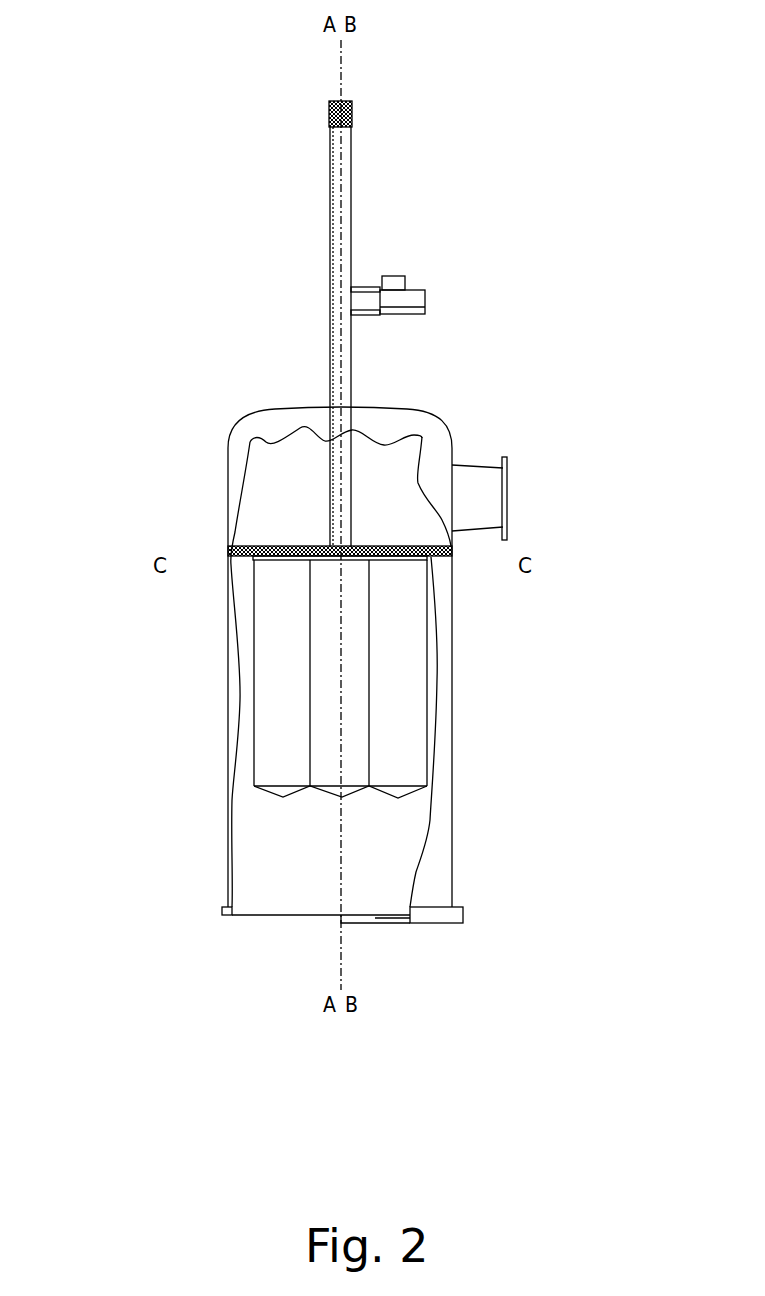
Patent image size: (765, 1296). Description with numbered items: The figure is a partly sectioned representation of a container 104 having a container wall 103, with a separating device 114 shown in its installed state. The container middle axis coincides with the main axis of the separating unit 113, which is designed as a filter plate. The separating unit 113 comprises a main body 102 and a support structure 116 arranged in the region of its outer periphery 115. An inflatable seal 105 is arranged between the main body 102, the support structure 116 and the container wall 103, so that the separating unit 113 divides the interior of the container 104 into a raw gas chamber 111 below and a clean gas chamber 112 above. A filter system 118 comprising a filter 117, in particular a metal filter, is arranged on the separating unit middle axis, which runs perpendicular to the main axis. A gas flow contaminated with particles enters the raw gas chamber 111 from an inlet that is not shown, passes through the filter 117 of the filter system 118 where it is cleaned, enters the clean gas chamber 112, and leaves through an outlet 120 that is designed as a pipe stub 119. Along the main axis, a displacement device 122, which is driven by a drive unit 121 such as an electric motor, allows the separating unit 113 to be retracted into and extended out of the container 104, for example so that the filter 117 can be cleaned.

The main body 102 is at (247, 559).
The container wall 103 is at (236, 714).
The container 104 is at (197, 666).
The inflatable seal 105 is at (229, 549).
The raw gas chamber 111 is at (304, 899).
The clean gas chamber 112 is at (316, 491).
The separating unit 113 is at (252, 533).
The separating device 114 is at (137, 409).
The outer periphery 115 is at (443, 536).
The support structure 116 is at (434, 561).
The filter 117 is at (268, 773).
The filter system 118 is at (290, 803).
The pipe stub 119 is at (483, 517).
The outlet 120 is at (520, 493).
The drive unit 121 is at (415, 300).
The displacement device 122 is at (368, 251).